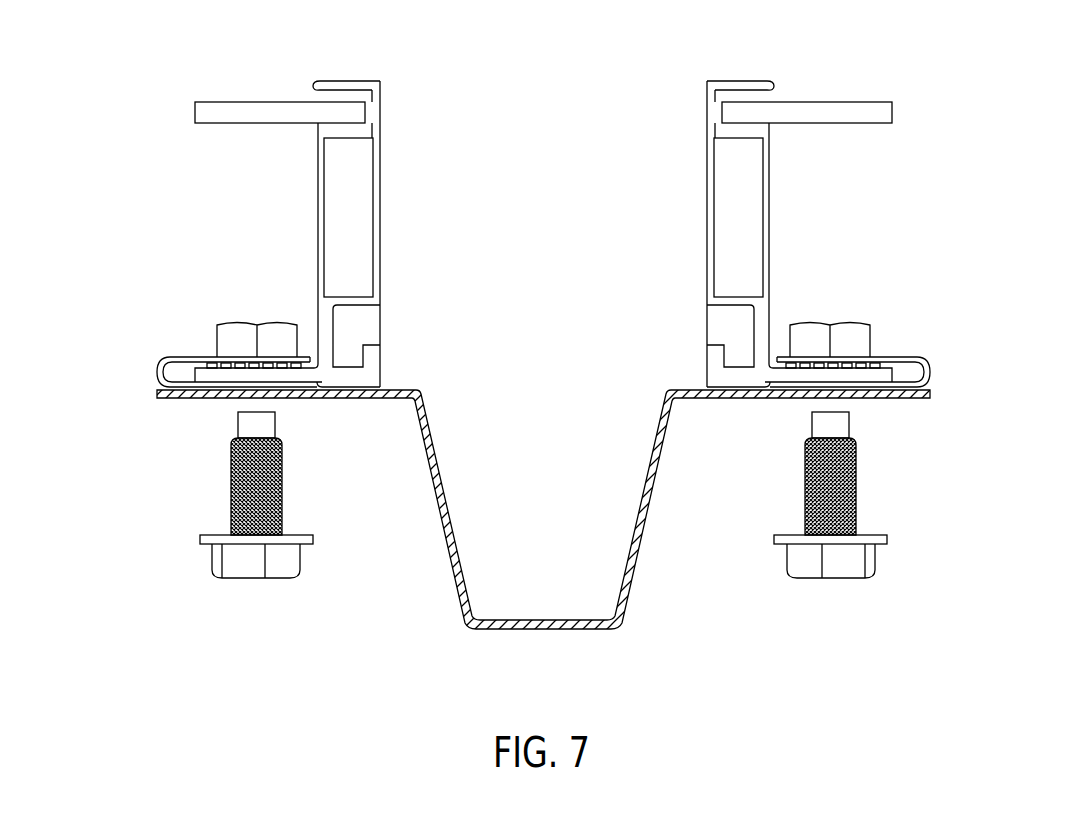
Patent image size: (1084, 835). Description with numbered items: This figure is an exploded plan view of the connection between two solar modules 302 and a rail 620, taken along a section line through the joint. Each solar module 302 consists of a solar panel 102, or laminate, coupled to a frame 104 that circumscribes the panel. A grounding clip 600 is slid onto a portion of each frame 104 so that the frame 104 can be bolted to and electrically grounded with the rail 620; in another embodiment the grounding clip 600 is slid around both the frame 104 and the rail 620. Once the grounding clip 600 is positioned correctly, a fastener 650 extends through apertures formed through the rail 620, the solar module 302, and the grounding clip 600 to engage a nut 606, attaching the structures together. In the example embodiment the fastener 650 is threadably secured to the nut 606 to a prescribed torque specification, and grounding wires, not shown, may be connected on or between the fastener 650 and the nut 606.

The solar panel 102 is at (265, 83).
The frame 104 is at (393, 181).
The solar module 302 is at (157, 116).
The grounding clip 600 is at (150, 338).
The nut 606 is at (253, 312).
The rail 620 is at (637, 593).
The fastener 650 is at (307, 501).